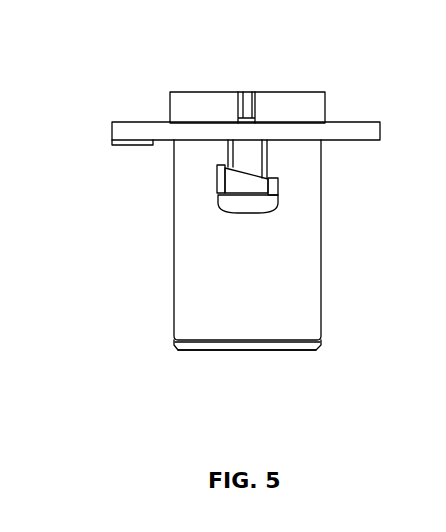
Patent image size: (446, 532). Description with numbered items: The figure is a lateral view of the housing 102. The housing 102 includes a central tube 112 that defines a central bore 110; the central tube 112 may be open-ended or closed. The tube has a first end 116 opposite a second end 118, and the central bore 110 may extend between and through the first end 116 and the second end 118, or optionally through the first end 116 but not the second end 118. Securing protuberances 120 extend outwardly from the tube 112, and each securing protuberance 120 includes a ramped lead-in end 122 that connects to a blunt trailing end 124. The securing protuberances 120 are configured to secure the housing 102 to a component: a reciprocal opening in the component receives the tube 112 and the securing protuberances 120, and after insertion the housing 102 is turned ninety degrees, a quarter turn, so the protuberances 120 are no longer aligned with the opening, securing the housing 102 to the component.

The housing 102 is at (158, 75).
The first end 116 is at (310, 92).
The central tube 112 is at (174, 303).
The second end 118 is at (318, 347).
The central bore 110 is at (217, 351).
The blunt trailing end 124 is at (217, 170).
The ramped lead-in end 122 is at (262, 180).
The securing protuberances 120 is at (223, 187).